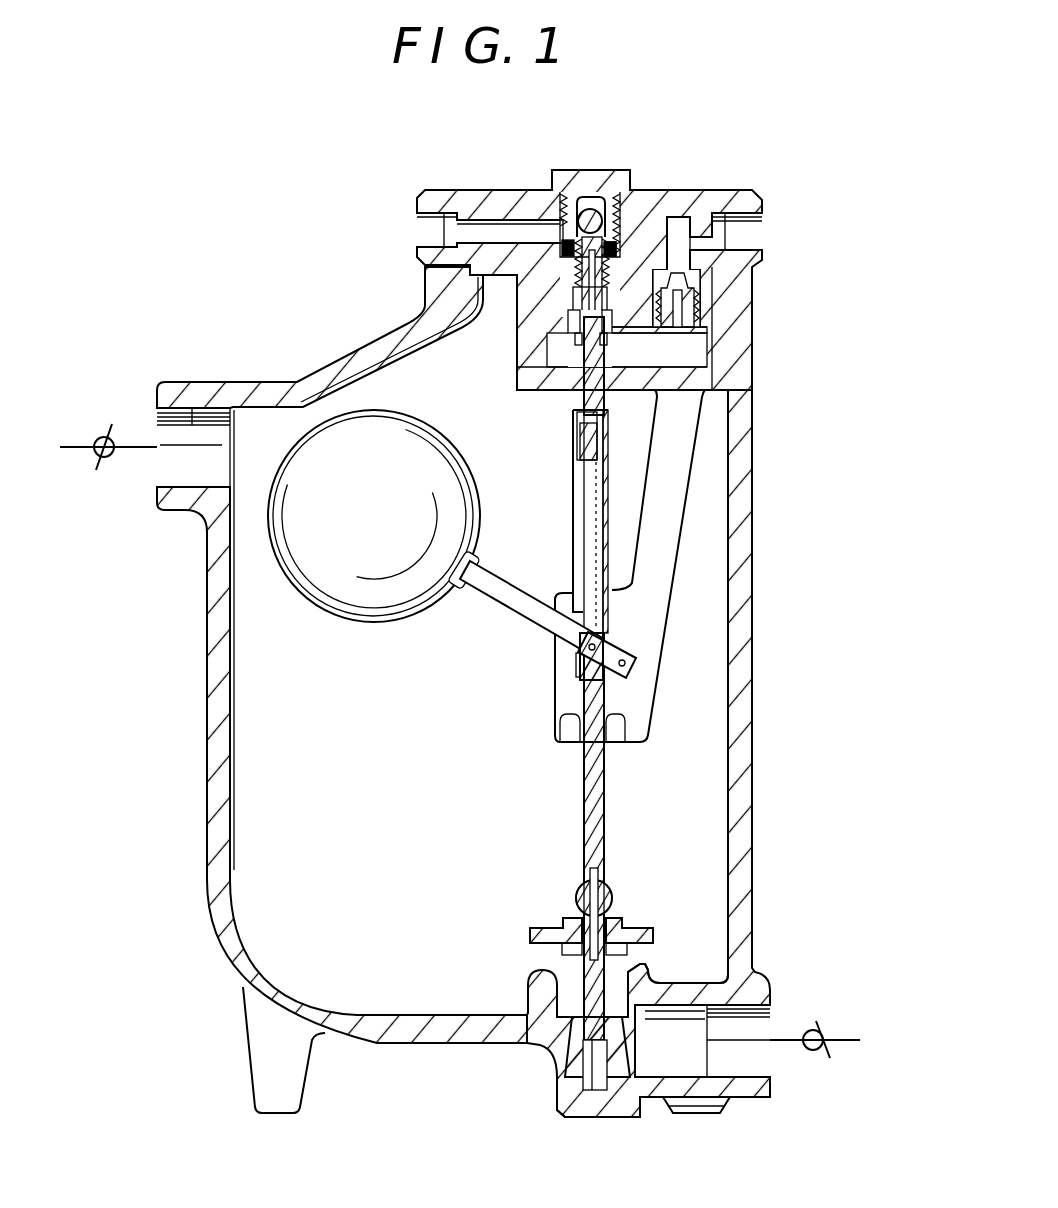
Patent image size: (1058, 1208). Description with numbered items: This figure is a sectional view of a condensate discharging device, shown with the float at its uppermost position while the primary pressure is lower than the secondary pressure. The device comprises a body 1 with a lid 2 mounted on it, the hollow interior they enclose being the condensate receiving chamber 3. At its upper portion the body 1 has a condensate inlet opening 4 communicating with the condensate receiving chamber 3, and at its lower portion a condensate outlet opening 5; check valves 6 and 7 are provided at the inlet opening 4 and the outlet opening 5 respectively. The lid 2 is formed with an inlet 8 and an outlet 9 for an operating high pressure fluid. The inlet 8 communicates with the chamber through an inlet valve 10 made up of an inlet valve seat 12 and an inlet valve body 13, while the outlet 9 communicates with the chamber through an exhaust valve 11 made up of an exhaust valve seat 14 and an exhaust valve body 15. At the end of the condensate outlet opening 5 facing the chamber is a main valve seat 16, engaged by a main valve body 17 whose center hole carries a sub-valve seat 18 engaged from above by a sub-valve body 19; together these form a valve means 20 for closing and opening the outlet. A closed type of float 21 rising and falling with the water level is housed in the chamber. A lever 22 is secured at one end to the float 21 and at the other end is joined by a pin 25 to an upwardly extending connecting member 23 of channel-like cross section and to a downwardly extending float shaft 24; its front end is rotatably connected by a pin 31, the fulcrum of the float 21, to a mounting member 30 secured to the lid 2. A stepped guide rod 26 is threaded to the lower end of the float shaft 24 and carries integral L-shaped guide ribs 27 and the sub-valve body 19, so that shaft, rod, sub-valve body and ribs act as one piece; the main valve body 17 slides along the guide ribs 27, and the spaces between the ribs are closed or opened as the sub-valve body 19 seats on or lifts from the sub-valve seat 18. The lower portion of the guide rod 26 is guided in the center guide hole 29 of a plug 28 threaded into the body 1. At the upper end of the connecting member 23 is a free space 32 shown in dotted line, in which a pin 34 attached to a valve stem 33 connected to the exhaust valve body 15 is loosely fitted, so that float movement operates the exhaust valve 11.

The body 1 is at (210, 793).
The lid 2 is at (465, 190).
The condensate receiving chamber 3 is at (234, 714).
The condensate inlet opening 4 is at (193, 425).
The condensate outlet opening 5 is at (750, 1067).
The check valve 6 is at (106, 428).
The check valve 7 is at (830, 1060).
The inlet 8 is at (432, 232).
The outlet 9 is at (752, 232).
The inlet valve 10 is at (548, 226).
The exhaust valve 11 is at (688, 344).
The inlet valve seat 12 is at (617, 245).
The inlet valve body 13 is at (592, 208).
The exhaust valve seat 14 is at (700, 305).
The exhaust valve body 15 is at (708, 331).
The main valve seat 16 is at (650, 973).
The main valve body 17 is at (648, 930).
The sub-valve seat 18 is at (565, 926).
The sub-valve body 19 is at (578, 900).
The valve means 20 is at (638, 906).
The float 21 is at (390, 531).
The lever 22 is at (508, 603).
The connecting member 23 is at (612, 550).
The float shaft 24 is at (608, 782).
The pin 25 is at (604, 645).
The guide rod 26 is at (598, 1032).
The guide ribs 27 is at (570, 950).
The plug 28 is at (565, 1110).
The center guide hole 29 is at (590, 1055).
The mounting member 30 is at (715, 380).
The pin 31 is at (637, 668).
The free space 32 is at (580, 438).
The valve stem 33 is at (585, 398).
The pin 34 is at (585, 447).